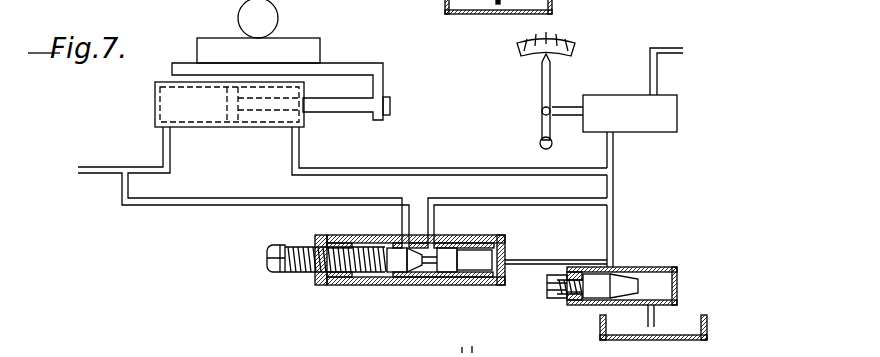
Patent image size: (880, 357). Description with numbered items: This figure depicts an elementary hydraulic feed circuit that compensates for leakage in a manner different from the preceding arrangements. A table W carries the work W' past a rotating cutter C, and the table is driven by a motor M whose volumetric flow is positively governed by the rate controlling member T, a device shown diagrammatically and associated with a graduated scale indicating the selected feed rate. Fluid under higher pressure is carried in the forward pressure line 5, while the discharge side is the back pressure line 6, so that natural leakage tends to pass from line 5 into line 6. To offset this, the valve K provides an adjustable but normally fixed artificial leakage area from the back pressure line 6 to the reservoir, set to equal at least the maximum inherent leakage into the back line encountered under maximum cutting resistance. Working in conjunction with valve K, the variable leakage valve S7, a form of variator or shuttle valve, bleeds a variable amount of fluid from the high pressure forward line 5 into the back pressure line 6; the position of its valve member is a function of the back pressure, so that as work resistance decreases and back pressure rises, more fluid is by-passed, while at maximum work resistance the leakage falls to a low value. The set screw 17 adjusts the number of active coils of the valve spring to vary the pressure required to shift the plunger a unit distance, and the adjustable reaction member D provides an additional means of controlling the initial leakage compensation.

The cutter C is at (278, 12).
The work W' is at (274, 50).
The table W is at (291, 91).
The motor M is at (210, 128).
The forward pressure line 5 is at (90, 167).
The back pressure line 6 is at (358, 167).
The rate controlling member T is at (617, 94).
The variable leakage valve S7 is at (458, 234).
The set screw 17 is at (268, 273).
The adjustable reaction member D is at (316, 287).
The leakage valve K is at (633, 267).